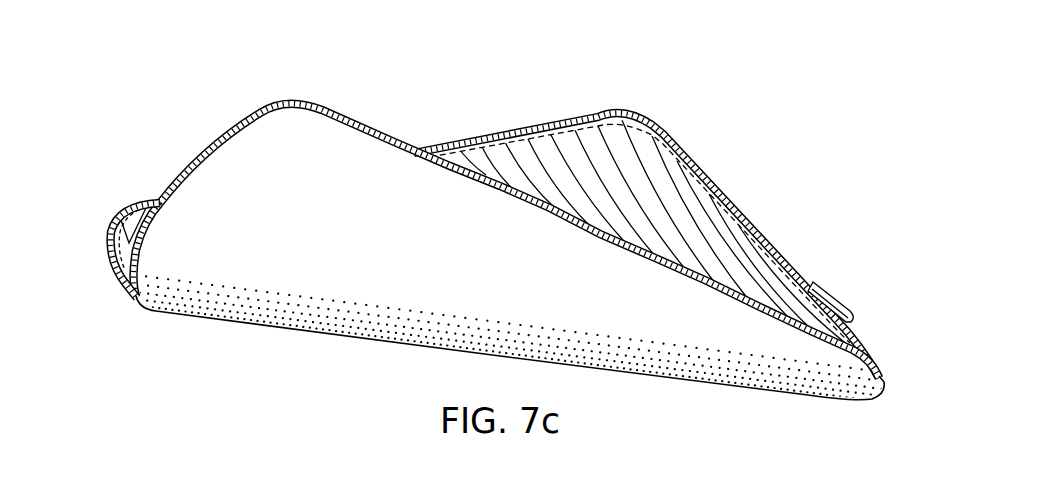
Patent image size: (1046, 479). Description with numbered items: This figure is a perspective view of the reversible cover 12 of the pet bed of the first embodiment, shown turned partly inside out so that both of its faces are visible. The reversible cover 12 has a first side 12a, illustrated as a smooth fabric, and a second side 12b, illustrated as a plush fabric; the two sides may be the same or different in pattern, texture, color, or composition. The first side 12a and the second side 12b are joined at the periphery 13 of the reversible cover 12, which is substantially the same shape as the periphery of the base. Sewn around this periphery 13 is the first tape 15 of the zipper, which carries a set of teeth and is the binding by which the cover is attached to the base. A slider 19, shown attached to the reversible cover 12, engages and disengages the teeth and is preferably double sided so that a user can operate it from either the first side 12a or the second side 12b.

The reversible cover 12 is at (487, 91).
The first side 12a is at (472, 157).
The second side 12b is at (379, 164).
The periphery 13 is at (195, 167).
The first tape 15 is at (881, 372).
The slider 19 is at (845, 299).